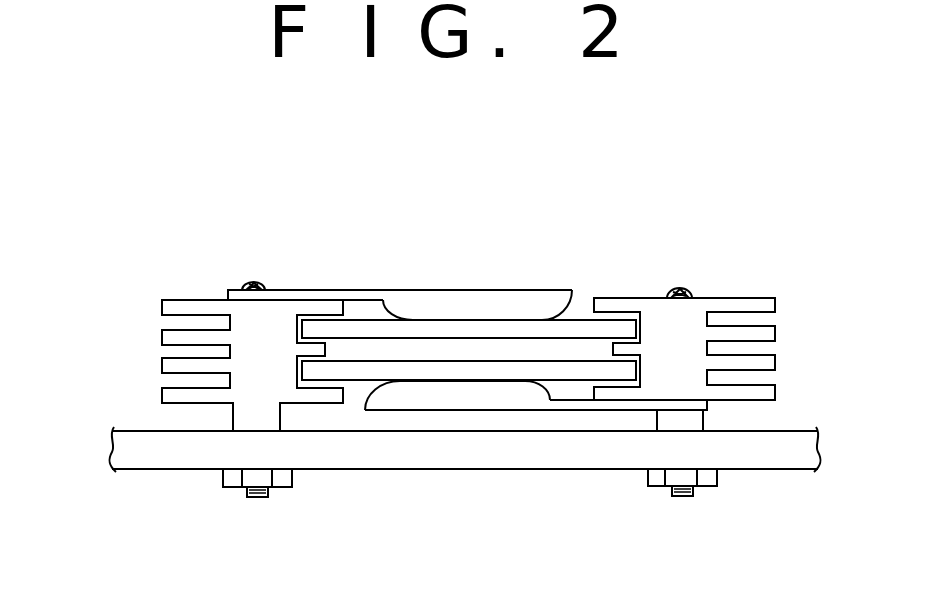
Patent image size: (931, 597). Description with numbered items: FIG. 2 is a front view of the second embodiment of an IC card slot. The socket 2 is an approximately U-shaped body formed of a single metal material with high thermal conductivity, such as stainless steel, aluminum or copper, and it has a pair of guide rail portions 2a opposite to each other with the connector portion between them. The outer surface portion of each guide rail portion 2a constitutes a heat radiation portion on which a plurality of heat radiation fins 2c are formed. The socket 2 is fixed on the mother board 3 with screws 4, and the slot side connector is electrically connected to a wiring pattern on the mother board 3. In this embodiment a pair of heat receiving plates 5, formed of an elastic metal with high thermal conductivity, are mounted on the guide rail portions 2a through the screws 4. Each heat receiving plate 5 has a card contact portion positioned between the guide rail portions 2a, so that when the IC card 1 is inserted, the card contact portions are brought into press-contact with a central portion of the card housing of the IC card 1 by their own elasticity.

The IC card 1 is at (495, 328).
The socket 2 is at (466, 322).
The guide rail portion 2a is at (235, 320).
The heat radiation fins 2c is at (170, 304).
The mother board 3 is at (533, 467).
The screws 4 is at (253, 283).
The heat receiving plate 5 is at (412, 294).